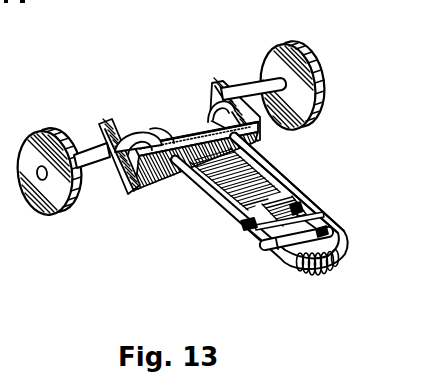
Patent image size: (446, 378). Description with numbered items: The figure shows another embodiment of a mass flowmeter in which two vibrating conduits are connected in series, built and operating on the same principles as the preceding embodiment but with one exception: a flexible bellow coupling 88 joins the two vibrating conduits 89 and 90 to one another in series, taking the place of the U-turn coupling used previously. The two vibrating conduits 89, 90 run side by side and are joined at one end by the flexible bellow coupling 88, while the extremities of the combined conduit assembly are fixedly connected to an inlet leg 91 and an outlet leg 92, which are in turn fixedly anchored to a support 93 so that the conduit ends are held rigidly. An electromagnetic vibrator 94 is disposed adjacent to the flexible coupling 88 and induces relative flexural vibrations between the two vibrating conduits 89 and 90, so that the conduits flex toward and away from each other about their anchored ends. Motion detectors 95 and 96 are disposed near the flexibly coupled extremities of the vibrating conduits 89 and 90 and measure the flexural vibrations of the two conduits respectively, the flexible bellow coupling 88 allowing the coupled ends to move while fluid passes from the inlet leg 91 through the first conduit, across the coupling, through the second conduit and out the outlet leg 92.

The flexible bellow coupling 88 is at (322, 268).
The vibrating conduit 89 is at (198, 207).
The vibrating conduit 90 is at (284, 174).
The inlet leg 91 is at (91, 127).
The outlet leg 92 is at (253, 87).
The support 93 is at (187, 131).
The electromagnetic vibrator 94 is at (277, 267).
The motion detector 95 is at (248, 248).
The motion detector 96 is at (313, 220).